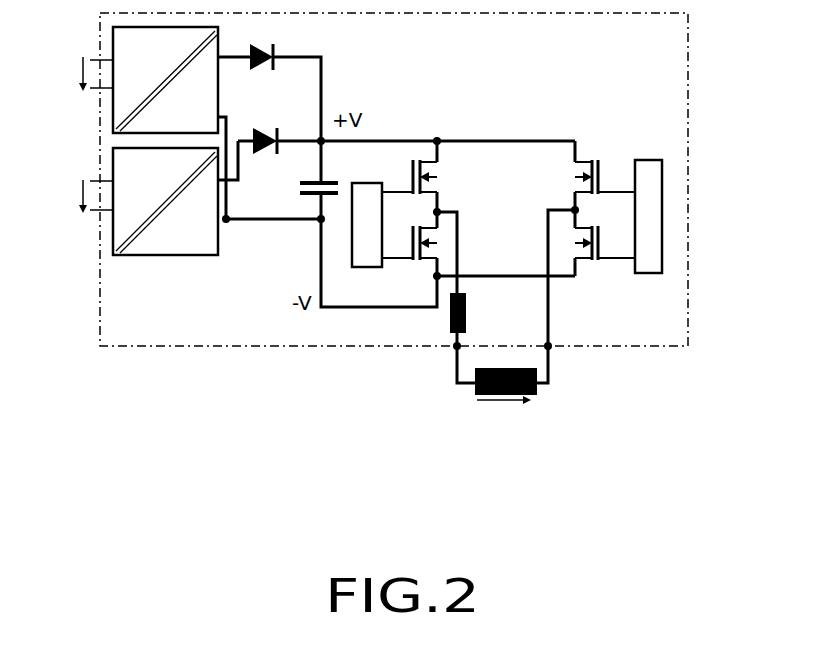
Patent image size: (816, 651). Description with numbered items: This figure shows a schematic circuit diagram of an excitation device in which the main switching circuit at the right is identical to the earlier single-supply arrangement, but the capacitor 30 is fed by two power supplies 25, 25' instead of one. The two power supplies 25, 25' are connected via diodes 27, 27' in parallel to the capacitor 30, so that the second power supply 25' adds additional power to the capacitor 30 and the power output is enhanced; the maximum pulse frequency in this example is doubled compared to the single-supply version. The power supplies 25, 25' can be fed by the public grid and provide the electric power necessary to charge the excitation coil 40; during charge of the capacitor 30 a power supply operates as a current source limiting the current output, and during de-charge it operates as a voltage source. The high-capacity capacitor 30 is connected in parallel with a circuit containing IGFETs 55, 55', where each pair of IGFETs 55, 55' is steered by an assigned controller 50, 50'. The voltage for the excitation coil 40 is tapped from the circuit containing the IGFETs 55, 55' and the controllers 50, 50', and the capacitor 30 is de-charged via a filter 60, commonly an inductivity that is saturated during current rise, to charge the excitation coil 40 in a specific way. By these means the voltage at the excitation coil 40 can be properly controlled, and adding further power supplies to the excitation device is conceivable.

The power supply 25 is at (127, 67).
The second power supply 25' is at (125, 198).
The diode 27 is at (303, 44).
The diode 27' is at (311, 106).
The capacitor 30 is at (308, 197).
The controller 50 is at (321, 237).
The controller 50' is at (701, 209).
The IGFETs 55 is at (435, 209).
The IGFETs 55' is at (580, 210).
The filter 60 is at (450, 325).
The excitation coil 40 is at (530, 395).